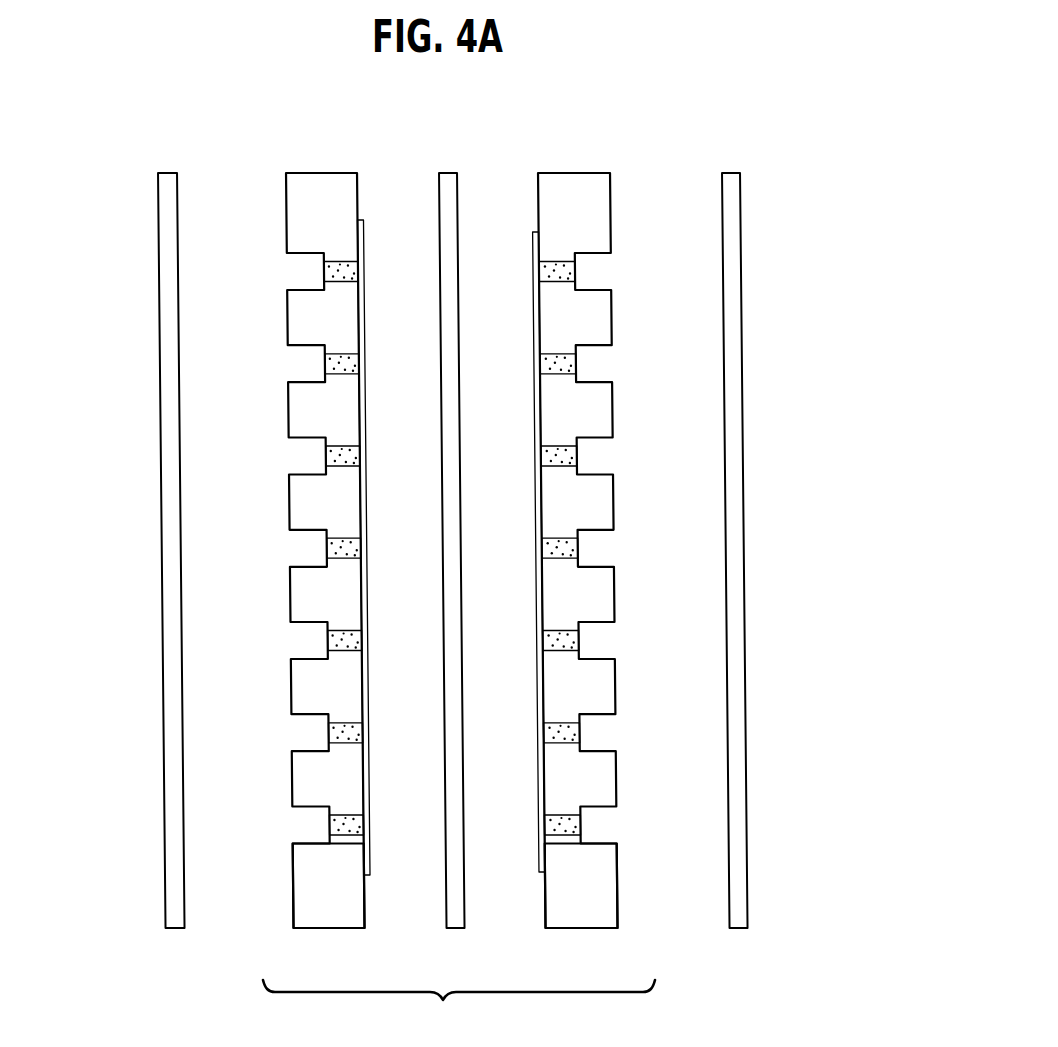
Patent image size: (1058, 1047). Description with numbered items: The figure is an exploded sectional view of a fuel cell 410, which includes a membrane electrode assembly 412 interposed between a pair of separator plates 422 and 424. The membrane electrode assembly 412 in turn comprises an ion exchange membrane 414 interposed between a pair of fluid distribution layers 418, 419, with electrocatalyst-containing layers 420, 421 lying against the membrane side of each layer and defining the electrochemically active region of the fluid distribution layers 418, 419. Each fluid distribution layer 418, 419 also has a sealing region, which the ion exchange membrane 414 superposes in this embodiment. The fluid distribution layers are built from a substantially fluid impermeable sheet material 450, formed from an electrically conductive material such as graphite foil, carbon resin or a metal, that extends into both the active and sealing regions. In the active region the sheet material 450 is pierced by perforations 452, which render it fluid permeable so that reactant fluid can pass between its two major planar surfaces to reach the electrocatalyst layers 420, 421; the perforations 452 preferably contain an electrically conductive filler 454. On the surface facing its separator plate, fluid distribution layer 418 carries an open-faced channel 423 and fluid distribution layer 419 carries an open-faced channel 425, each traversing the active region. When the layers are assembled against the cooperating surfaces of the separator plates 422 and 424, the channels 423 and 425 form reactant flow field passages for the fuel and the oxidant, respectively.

The fuel cell 410 is at (727, 143).
The membrane electrode assembly 412 is at (459, 1012).
The ion exchange membrane 414 is at (451, 173).
The fluid distribution layer 418 is at (332, 163).
The fluid distribution layer 419 is at (580, 163).
The electrocatalyst-containing layer 420 is at (363, 232).
The electrocatalyst-containing layer 421 is at (533, 262).
The separator plate 422 is at (158, 236).
The open-faced channel 423 is at (295, 270).
The separator plate 424 is at (727, 227).
The open-faced channel 425 is at (593, 275).
The substantially fluid impermeable sheet material 450 is at (312, 917).
The perforations 452 is at (325, 733).
The electrically conductive filler 454 is at (580, 733).